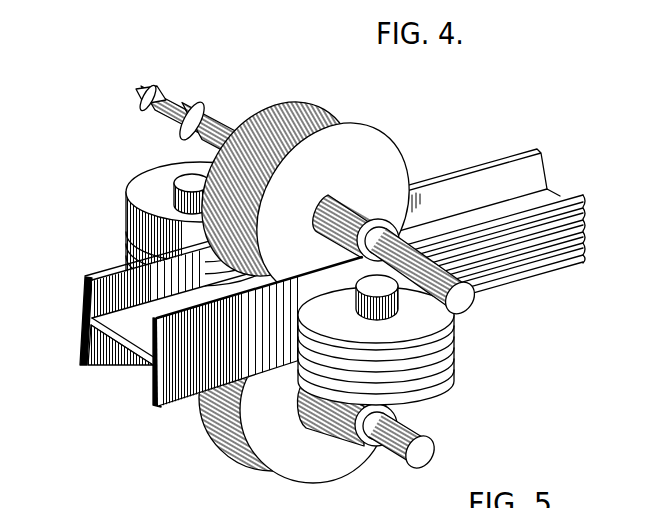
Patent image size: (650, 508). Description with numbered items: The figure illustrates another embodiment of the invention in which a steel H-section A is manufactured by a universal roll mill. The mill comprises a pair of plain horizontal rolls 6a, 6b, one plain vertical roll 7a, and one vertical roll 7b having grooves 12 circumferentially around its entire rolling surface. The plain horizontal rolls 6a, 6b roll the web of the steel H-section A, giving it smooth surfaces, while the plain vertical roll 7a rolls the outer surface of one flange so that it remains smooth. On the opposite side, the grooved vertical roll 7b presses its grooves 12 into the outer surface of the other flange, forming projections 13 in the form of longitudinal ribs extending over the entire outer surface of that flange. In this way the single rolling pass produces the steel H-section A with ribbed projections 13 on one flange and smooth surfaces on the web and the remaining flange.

The plain horizontal roll 6a is at (377, 152).
The plain horizontal roll 6b is at (286, 461).
The plain vertical roll 7a is at (126, 229).
The vertical roll having grooves 7b is at (427, 357).
The grooves 12 is at (453, 337).
The projections 13 is at (558, 262).
The steel H-section A is at (152, 396).